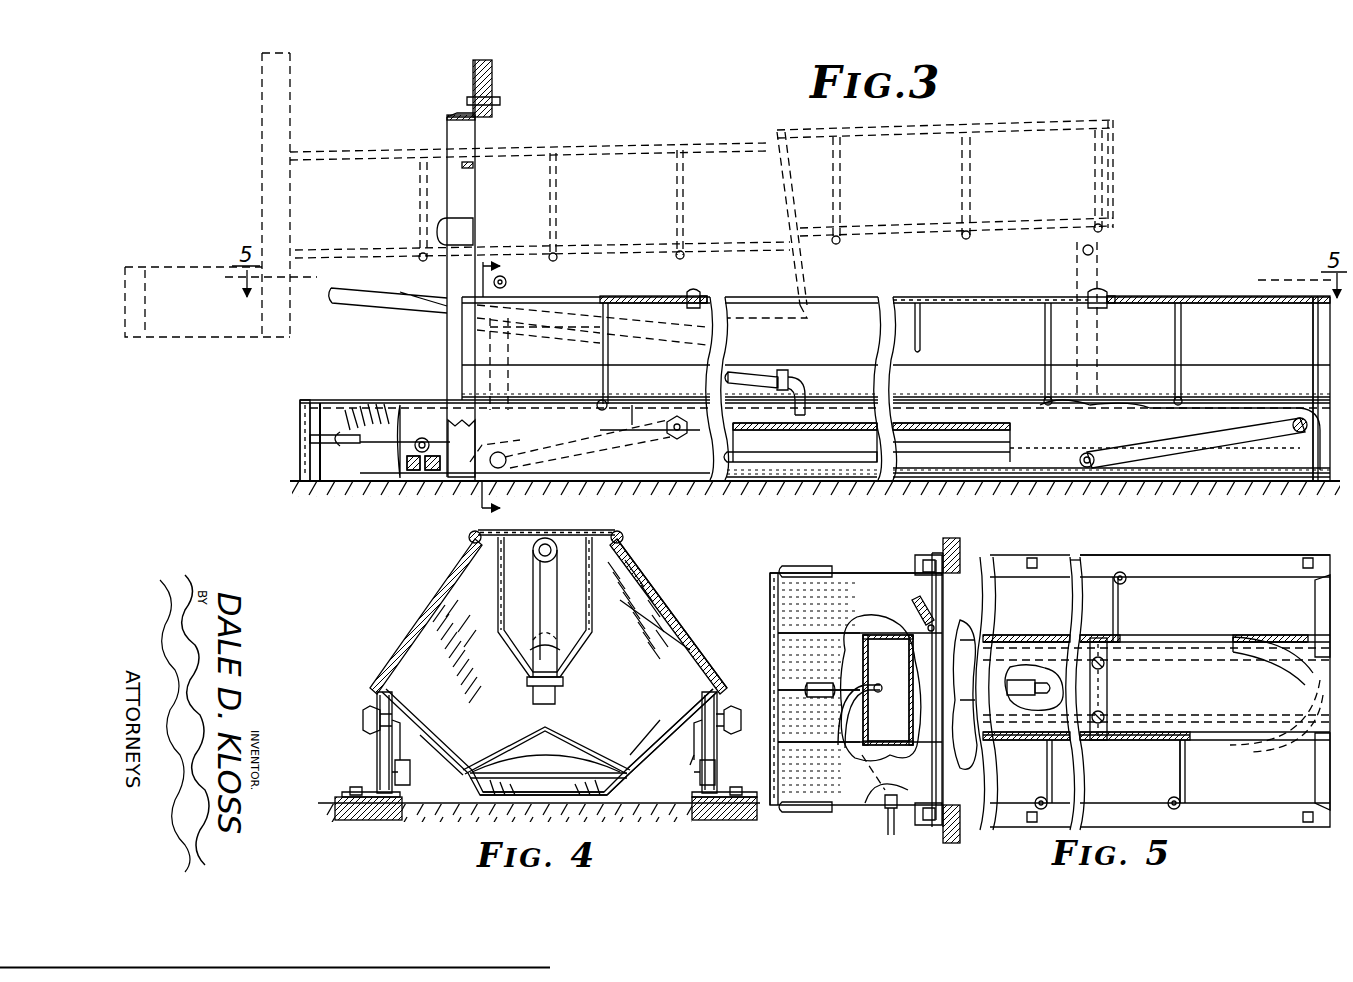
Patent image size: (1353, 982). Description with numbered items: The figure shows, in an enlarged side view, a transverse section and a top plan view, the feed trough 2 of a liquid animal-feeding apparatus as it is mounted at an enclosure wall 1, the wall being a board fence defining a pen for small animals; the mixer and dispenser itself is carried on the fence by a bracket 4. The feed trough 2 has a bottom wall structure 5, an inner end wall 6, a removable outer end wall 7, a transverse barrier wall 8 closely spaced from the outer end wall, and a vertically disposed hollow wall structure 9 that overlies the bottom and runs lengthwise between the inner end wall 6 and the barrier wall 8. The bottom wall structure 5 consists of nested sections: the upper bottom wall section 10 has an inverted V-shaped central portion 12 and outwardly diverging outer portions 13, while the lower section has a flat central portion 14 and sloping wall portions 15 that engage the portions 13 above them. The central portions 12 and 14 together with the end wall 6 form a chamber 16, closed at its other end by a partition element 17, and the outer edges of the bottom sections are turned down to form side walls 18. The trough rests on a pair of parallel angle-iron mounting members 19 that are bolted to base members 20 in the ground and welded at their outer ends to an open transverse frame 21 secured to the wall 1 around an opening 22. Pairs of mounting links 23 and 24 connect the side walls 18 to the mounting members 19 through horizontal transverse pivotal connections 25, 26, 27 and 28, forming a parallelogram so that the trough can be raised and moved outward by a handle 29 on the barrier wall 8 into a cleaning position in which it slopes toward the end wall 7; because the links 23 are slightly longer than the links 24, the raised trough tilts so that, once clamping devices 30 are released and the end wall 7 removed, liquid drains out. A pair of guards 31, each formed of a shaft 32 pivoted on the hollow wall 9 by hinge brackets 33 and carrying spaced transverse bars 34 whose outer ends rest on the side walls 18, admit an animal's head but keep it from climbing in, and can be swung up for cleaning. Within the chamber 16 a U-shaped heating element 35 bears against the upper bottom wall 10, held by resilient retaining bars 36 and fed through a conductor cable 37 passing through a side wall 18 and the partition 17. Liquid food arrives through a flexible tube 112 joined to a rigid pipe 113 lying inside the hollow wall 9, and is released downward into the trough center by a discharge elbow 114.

In FIG. 3, the enclosure wall 1 is at (493, 80).
In FIG. 5, the enclosure wall 1 is at (952, 540).
In FIG. 3, the feed trough 2 is at (713, 138).
In FIG. 4, the feed trough 2 is at (690, 636).
In FIG. 5, the feed trough 2 is at (1175, 553).
In FIG. 3, the bracket 4 is at (509, 397).
In FIG. 3, the bottom wall structure 5 is at (391, 397).
In FIG. 4, the bottom wall structure 5 is at (642, 730).
In FIG. 5, the bottom wall structure 5 is at (868, 595).
In FIG. 3, the inner end wall 6 is at (1313, 336).
In FIG. 4, the inner end wall 6 is at (660, 620).
In FIG. 5, the inner end wall 6 is at (1315, 602).
In FIG. 3, the outer end wall 7 is at (300, 424).
In FIG. 5, the outer end wall 7 is at (770, 604).
In FIG. 3, the transverse barrier wall 8 is at (478, 222).
In FIG. 5, the transverse barrier wall 8 is at (940, 615).
In FIG. 3, the hollow wall structure 9 is at (562, 353).
In FIG. 4, the hollow wall structure 9 is at (592, 611).
In FIG. 5, the hollow wall structure 9 is at (1182, 694).
In FIG. 4, the upper bottom wall section 10 is at (650, 720).
In FIG. 5, the upper bottom wall section 10 is at (848, 580).
In FIG. 4, the inverted V-shape central portion 12 is at (565, 745).
In FIG. 5, the inverted V-shape central portion 12 is at (808, 708).
In FIG. 4, the outwardly diverging outer portions 13 is at (420, 735).
In FIG. 5, the outwardly diverging outer portions 13 is at (798, 610).
In FIG. 4, the flat central portion 14 is at (545, 796).
In FIG. 5, the flat central portion 14 is at (880, 673).
In FIG. 4, the sloping wall portions 15 is at (463, 745).
In FIG. 5, the sloping wall portions 15 is at (887, 630).
In FIG. 4, the chamber 16 is at (530, 742).
In FIG. 5, the partition element 17 is at (863, 654).
In FIG. 4, the side walls 18 is at (378, 752).
In FIG. 5, the side walls 18 is at (1232, 576).
In FIG. 3, the mounting members 19 is at (896, 485).
In FIG. 4, the mounting members 19 is at (345, 790).
In FIG. 5, the mounting members 19 is at (1058, 565).
In FIG. 3, the base members 20 is at (928, 482).
In FIG. 4, the base members 20 is at (350, 820).
In FIG. 3, the open transverse frame 21 is at (447, 121).
In FIG. 5, the open transverse frame 21 is at (935, 556).
In FIG. 3, the opening 22 is at (488, 120).
In FIG. 5, the opening 22 is at (970, 570).
In FIG. 3, the mounting links 23 is at (1102, 330).
In FIG. 3, the mounting links 24 is at (510, 346).
In FIG. 4, the mounting links 24 is at (420, 733).
In FIG. 3, the pivotal connection 25 is at (1100, 250).
In FIG. 3, the pivotal connection 26 is at (1088, 470).
In FIG. 5, the pivotal connection 26 is at (1088, 565).
In FIG. 3, the pivotal connection 27 is at (510, 460).
In FIG. 4, the pivotal connection 27 is at (410, 775).
In FIG. 3, the pivotal connection 28 is at (508, 284).
In FIG. 4, the pivotal connection 28 is at (365, 725).
In FIG. 3, the handle 29 is at (437, 232).
In FIG. 3, the clamping devices 30 is at (320, 481).
In FIG. 5, the clamping devices 30 is at (812, 570).
In FIG. 3, the guards 31 is at (630, 297).
In FIG. 4, the guards 31 is at (445, 583).
In FIG. 5, the guards 31 is at (1190, 762).
In FIG. 3, the shaft 32 is at (706, 297).
In FIG. 4, the shaft 32 is at (468, 534).
In FIG. 5, the shaft 32 is at (1010, 645).
In FIG. 3, the hinge brackets 33 is at (690, 290).
In FIG. 4, the hinge brackets 33 is at (620, 532).
In FIG. 5, the hinge brackets 33 is at (1110, 701).
In FIG. 3, the transverse bars 34 is at (610, 360).
In FIG. 4, the transverse bars 34 is at (432, 610).
In FIG. 5, the transverse bars 34 is at (1120, 607).
In FIG. 3, the heating element 35 is at (818, 462).
In FIG. 4, the heating element 35 is at (623, 775).
In FIG. 5, the heating element 35 is at (1268, 640).
In FIG. 4, the resilient retaining bars 36 is at (590, 750).
In FIG. 5, the resilient retaining bars 36 is at (964, 705).
In FIG. 3, the conductor cable 37 is at (382, 475).
In FIG. 3, the flexible tube 112 is at (365, 305).
In FIG. 4, the flexible tube 112 is at (690, 752).
In FIG. 5, the flexible tube 112 is at (815, 680).
In FIG. 3, the rigid pipe 113 is at (742, 375).
In FIG. 4, the rigid pipe 113 is at (533, 601).
In FIG. 5, the rigid pipe 113 is at (1020, 680).
In FIG. 3, the discharge elbow 114 is at (802, 380).
In FIG. 4, the discharge elbow 114 is at (558, 690).
In FIG. 5, the discharge elbow 114 is at (1040, 680).